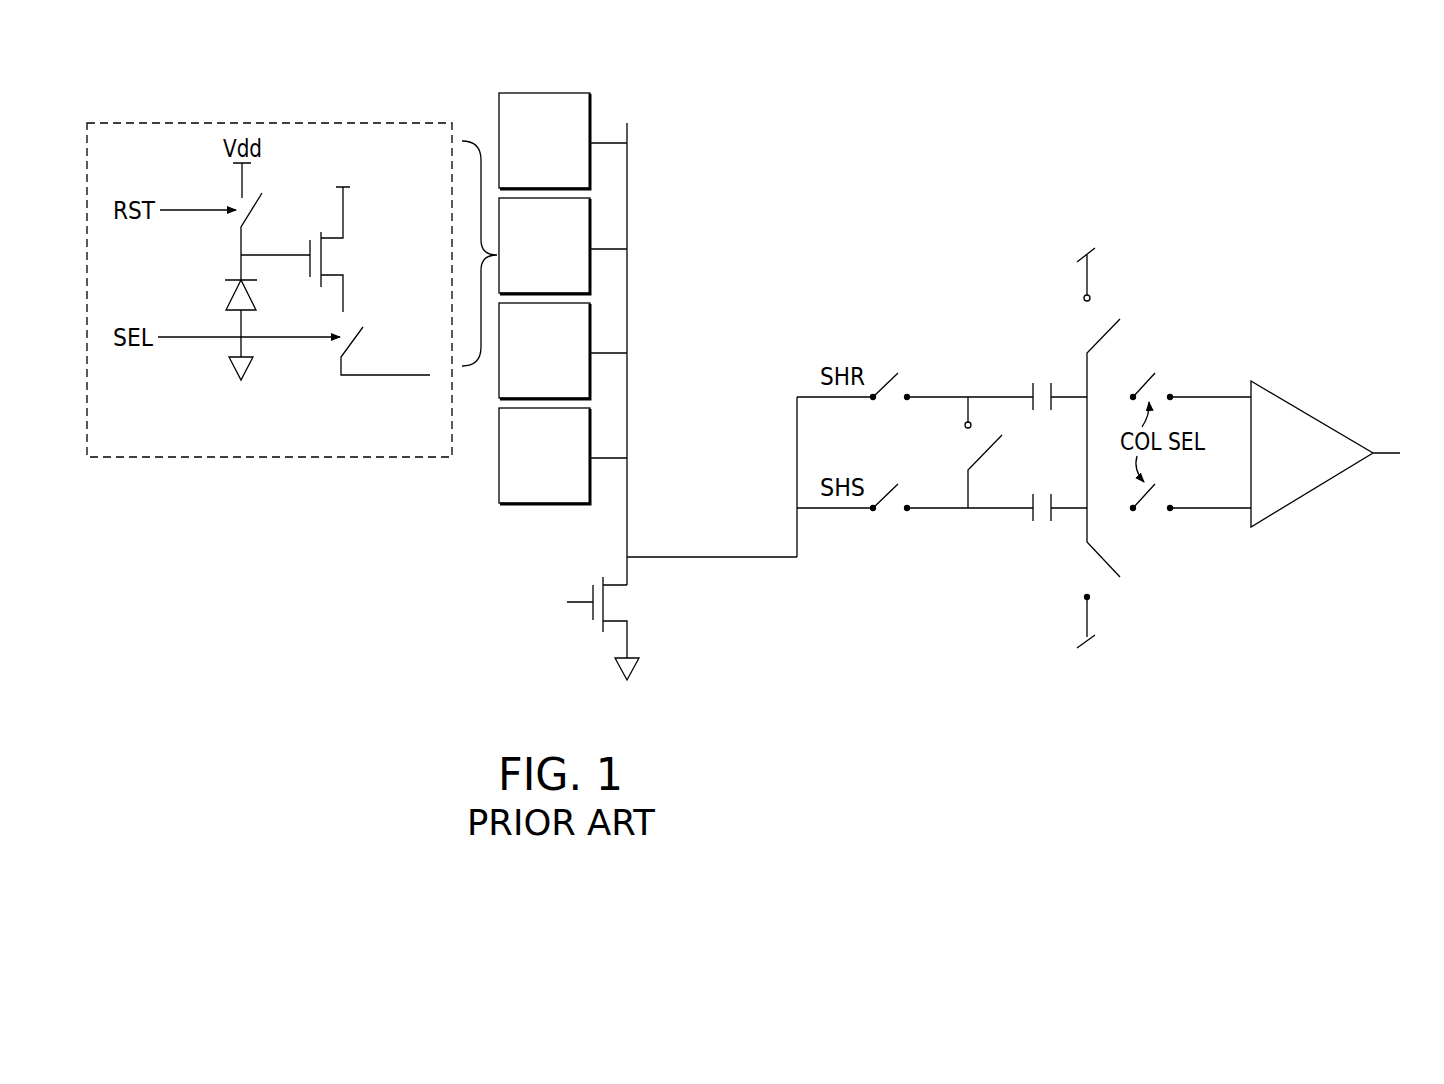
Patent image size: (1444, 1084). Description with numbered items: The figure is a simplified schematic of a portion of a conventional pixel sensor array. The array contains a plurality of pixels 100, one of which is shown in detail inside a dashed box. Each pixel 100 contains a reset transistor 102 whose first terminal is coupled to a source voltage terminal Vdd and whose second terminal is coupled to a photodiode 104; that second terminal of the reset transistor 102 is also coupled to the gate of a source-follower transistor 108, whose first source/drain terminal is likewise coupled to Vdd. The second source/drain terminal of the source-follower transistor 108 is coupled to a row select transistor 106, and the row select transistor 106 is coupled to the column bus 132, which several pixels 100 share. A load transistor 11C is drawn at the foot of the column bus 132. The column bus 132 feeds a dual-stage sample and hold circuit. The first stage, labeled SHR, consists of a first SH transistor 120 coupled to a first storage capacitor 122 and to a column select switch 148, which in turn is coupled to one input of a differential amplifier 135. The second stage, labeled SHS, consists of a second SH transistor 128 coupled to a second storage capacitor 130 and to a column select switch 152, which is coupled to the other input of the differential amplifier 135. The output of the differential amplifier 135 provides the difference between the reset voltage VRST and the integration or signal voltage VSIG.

The pixel 100 is at (561, 157).
The reset transistor 102 is at (264, 179).
The photodiode 104 is at (228, 297).
The row select transistor 106 is at (359, 320).
The source-follower transistor 108 is at (360, 240).
The column bus 132 is at (627, 277).
The load transistor 11C is at (589, 631).
The first SH transistor 120 is at (908, 380).
The second SH transistor 128 is at (888, 515).
The first storage capacitor 122 is at (1043, 413).
The second storage capacitor 130 is at (1042, 523).
The column select switch 148 is at (1150, 382).
The column select switch 152 is at (1153, 512).
The differential amplifier 135 is at (1298, 408).